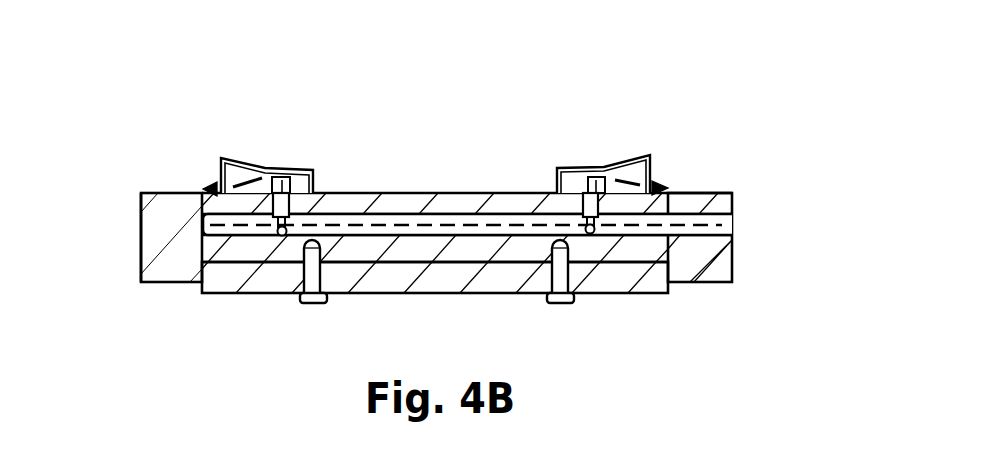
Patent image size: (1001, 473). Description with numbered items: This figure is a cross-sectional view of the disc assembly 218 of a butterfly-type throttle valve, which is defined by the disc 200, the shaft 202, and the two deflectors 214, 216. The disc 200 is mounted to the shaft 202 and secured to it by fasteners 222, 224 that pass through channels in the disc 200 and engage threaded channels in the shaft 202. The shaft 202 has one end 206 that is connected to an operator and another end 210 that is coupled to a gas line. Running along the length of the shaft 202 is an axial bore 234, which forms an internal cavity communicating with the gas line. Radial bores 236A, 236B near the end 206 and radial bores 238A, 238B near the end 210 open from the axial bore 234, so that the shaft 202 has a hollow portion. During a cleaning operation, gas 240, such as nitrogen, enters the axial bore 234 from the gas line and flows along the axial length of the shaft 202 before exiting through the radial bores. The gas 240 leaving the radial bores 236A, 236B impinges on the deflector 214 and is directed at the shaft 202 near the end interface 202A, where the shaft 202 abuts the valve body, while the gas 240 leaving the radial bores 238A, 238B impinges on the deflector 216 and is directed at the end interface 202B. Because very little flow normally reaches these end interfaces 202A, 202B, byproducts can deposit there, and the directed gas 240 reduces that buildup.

The disc assembly 218 is at (204, 96).
The disc 200 is at (265, 286).
The shaft 202 is at (140, 267).
The end interface 202A is at (202, 202).
The end interface 202B is at (671, 193).
The end of shaft 206 is at (140, 223).
The end of shaft 210 is at (732, 268).
The deflector 214 is at (237, 157).
The deflector 216 is at (587, 168).
The fastener 222 is at (317, 297).
The fastener 224 is at (563, 303).
The axial bore 234 is at (730, 196).
The radial bore 236A is at (283, 212).
The radial bore 236B is at (281, 233).
The radial bore 238A is at (592, 218).
The radial bore 238B is at (592, 230).
The gas 240 is at (733, 225).